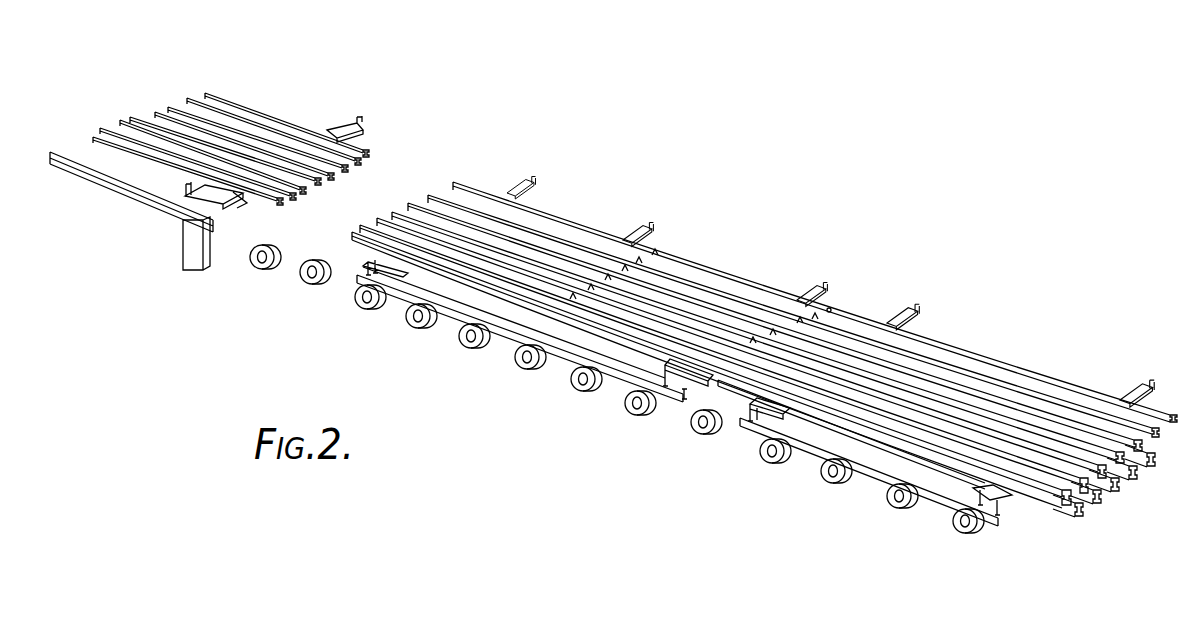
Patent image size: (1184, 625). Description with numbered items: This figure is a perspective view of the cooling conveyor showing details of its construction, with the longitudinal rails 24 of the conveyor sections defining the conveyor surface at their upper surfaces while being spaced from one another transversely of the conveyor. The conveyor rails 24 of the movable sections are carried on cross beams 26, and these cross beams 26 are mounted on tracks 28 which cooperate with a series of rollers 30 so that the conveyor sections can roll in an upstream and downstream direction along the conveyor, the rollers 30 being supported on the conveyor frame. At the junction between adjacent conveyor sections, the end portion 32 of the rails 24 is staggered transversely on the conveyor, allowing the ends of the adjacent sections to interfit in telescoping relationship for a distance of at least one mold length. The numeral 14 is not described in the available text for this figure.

The rails 14 is at (212, 93).
The longitudinal rails 24 is at (360, 167).
The cross beams 26 is at (357, 128).
The tracks 28 is at (132, 196).
The rollers 30 is at (353, 297).
The end portion 32 is at (818, 320).